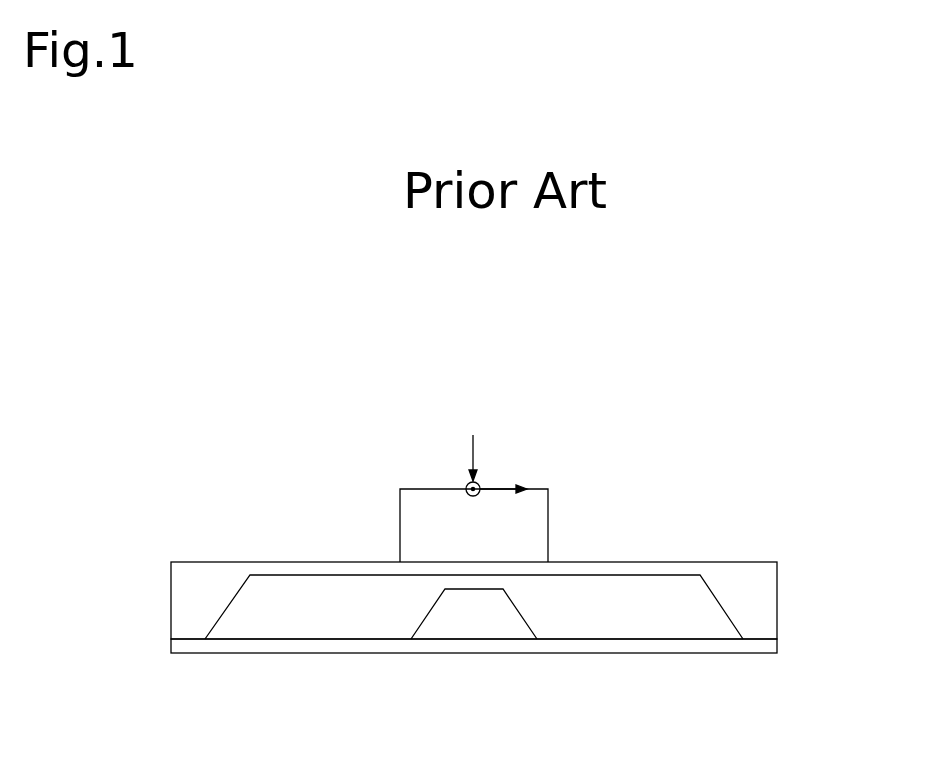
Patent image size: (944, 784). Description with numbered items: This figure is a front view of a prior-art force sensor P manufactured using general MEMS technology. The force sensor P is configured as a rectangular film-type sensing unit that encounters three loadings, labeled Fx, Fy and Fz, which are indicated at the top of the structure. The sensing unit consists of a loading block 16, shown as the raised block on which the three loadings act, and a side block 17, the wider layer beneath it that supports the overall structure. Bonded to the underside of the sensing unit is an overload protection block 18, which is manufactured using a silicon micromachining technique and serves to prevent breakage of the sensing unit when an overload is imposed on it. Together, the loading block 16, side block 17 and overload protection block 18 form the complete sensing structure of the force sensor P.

The loading block 16 is at (418, 515).
The side block 17 is at (760, 587).
The overload protection block 18 is at (645, 645).
The force sensor P is at (630, 514).